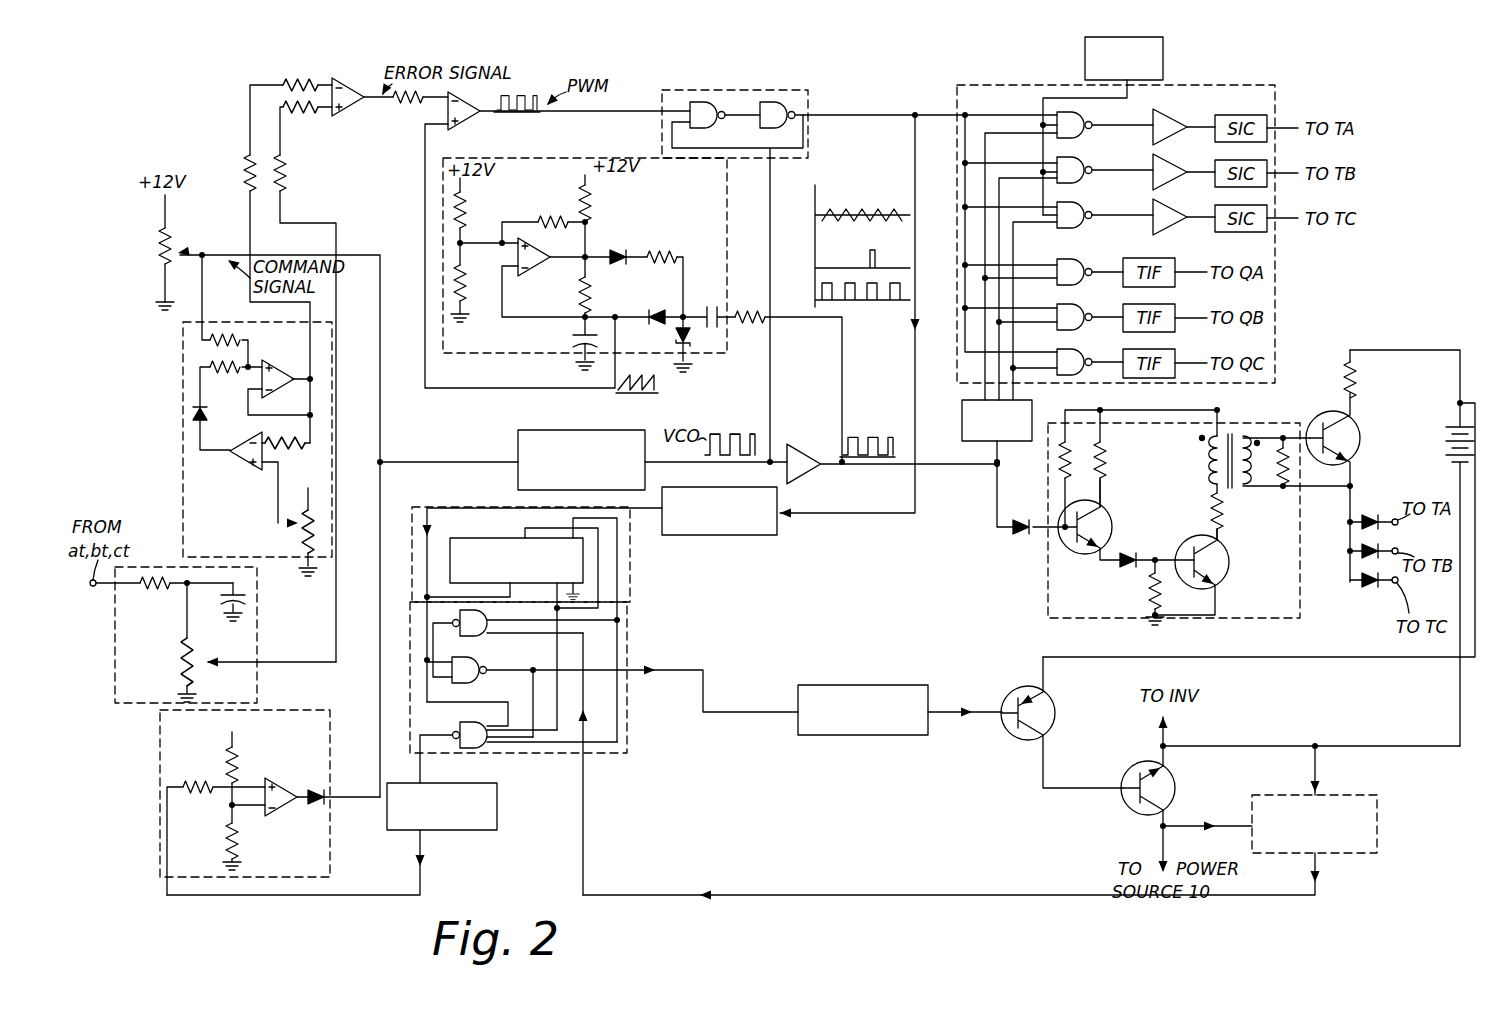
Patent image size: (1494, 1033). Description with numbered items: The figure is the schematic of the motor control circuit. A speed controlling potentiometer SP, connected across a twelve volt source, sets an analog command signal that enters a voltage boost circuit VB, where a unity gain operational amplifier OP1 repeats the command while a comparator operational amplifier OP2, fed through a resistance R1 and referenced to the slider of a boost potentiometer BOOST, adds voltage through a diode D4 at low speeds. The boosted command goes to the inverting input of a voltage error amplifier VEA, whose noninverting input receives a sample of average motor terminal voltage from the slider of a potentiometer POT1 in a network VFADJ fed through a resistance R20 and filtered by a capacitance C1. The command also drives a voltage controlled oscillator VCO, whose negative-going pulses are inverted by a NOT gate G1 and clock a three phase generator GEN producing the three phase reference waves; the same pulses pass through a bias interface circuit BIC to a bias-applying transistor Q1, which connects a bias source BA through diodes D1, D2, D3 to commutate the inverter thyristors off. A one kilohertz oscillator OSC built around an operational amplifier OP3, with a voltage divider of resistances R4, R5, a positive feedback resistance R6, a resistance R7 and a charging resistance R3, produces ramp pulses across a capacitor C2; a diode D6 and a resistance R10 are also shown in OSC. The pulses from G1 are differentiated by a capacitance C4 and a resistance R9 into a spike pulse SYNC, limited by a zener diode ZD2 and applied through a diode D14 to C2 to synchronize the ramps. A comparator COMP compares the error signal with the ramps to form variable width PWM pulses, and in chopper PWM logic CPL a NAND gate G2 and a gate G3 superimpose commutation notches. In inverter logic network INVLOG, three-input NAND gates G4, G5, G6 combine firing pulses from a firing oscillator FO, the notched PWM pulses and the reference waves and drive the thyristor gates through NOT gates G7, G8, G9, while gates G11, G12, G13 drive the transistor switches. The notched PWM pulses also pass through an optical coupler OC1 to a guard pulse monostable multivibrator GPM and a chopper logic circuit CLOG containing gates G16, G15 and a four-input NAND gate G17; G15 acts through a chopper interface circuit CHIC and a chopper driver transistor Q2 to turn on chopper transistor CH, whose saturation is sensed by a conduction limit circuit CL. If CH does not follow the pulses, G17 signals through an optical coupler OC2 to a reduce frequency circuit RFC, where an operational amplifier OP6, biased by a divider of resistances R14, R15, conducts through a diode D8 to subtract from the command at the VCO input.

The speed controlling potentiometer SP is at (156, 263).
The voltage error amplifier VEA is at (350, 79).
The comparator operational amplifier COMP is at (471, 123).
The chopper PWM logic CPL is at (734, 92).
The NAND logic gate G2 is at (706, 125).
The logic gate G3 is at (800, 114).
The constant frequency oscillator OSC is at (727, 262).
The resistance R4 is at (462, 202).
The resistance R5 is at (462, 279).
The positive feedback resistance R6 is at (544, 222).
The resistance R7 is at (591, 204).
The operational amplifier OP3 is at (534, 274).
The diode D6 is at (618, 252).
The resistor R10 is at (662, 254).
The charging resistance R3 is at (590, 300).
The capacitor C2 is at (570, 336).
The diode D14 is at (656, 312).
The zener diode ZD2 is at (670, 344).
The capacitance C4 is at (708, 308).
The resistance R9 is at (752, 312).
The spike synchronizing pulse SYNC is at (860, 210).
The inverter logic network INVLOG is at (1279, 293).
The firing oscillator FO is at (1163, 69).
The three-input NAND gate G4 is at (1089, 120).
The three-input NAND gate G5 is at (1089, 165).
The three-input NAND gate G6 is at (1089, 210).
The NOT gate G7 is at (1172, 116).
The NOT gate G8 is at (1172, 162).
The NOT gate G9 is at (1172, 207).
The logic gate G11 is at (1084, 264).
The logic gate G12 is at (1084, 309).
The logic gate G13 is at (1084, 354).
The three phase generator GEN is at (1020, 395).
The voltage controlled oscillator VCO is at (601, 433).
The NOT logic gate G1 is at (800, 474).
The optical isolator coupler OC1 is at (731, 536).
The guard pulse monostable multivibrator GPM is at (632, 594).
The chopper logic circuit CLOG is at (630, 750).
The logic gate G16 is at (484, 636).
The NAND logic gate G15 is at (484, 682).
The four-input NAND gate G17 is at (460, 749).
The optical isolator OC2 is at (498, 805).
The chopper interface circuit CHIC is at (855, 735).
The chopper driver transistor Q2 is at (1010, 740).
The chopper transistor CH is at (1123, 805).
The conduction limit circuit CL is at (1378, 818).
The bias interface circuit BIC is at (1048, 575).
The bias-applying transistor Q1 is at (1362, 426).
The diode D1 is at (1370, 514).
The diode D2 is at (1389, 547).
The diode D3 is at (1367, 584).
The bias source BA is at (1446, 447).
The voltage boost circuit VB is at (183, 456).
The diode D4 is at (192, 413).
The operational amplifier OP1 is at (272, 362).
The comparator operational amplifier OP2 is at (232, 470).
The resistance R1 is at (290, 450).
The boost potentiometer BOOST is at (305, 538).
The V/f ADJ network VFADJ is at (252, 686).
The resistance R20 is at (147, 599).
The capacitance C1 is at (248, 598).
The potentiometer POT1 is at (180, 668).
The reduce frequency circuit RFC is at (330, 862).
The resistance R14 is at (244, 756).
The resistance R15 is at (222, 845).
The operational amplifier OP6 is at (280, 818).
The diode D8 is at (305, 787).